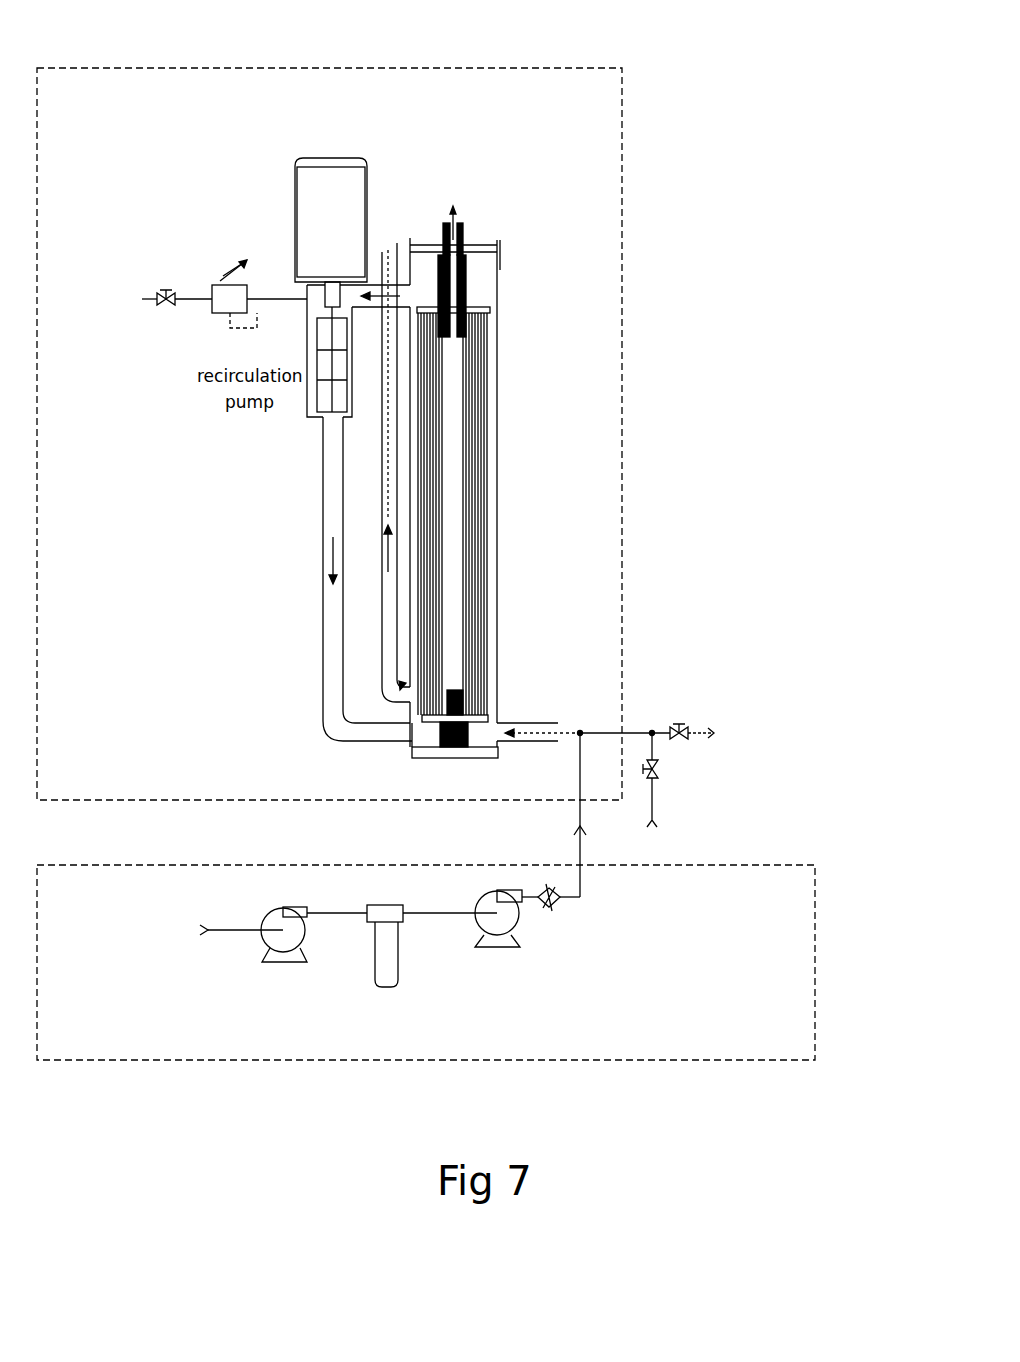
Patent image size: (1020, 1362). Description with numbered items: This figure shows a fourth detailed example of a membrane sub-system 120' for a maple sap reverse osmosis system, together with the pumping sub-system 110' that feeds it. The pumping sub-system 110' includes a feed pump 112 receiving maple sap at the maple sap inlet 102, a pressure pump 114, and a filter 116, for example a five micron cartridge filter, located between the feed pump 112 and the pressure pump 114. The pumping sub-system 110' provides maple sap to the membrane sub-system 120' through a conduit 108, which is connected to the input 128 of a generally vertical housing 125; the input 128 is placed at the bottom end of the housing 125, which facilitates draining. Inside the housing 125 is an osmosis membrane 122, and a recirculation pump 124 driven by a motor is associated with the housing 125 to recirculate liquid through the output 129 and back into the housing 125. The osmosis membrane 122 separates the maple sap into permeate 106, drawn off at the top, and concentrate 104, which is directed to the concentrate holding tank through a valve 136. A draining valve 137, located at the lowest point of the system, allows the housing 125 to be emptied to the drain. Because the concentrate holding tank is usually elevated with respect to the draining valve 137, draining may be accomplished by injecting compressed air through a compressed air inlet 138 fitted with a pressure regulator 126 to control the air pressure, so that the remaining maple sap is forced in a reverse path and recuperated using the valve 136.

The maple sap inlet 102 is at (235, 930).
The concentrate 104 is at (388, 232).
The permeate 106 is at (470, 182).
The conduit 108 is at (582, 885).
The pumping sub-system 110' is at (426, 994).
The feed pump 112 is at (263, 968).
The pressure pump 114 is at (522, 947).
The filter 116 is at (398, 968).
The membrane sub-system 120' is at (330, 402).
The osmosis membrane 122 is at (493, 478).
The recirculation pump 124 is at (292, 217).
The housing 125 is at (500, 262).
The pressure regulator 126 is at (220, 315).
The input 128 is at (547, 721).
The output 129 is at (397, 243).
The valve 136 is at (687, 737).
The draining valve 137 is at (658, 778).
The compressed air inlet 138 is at (150, 287).